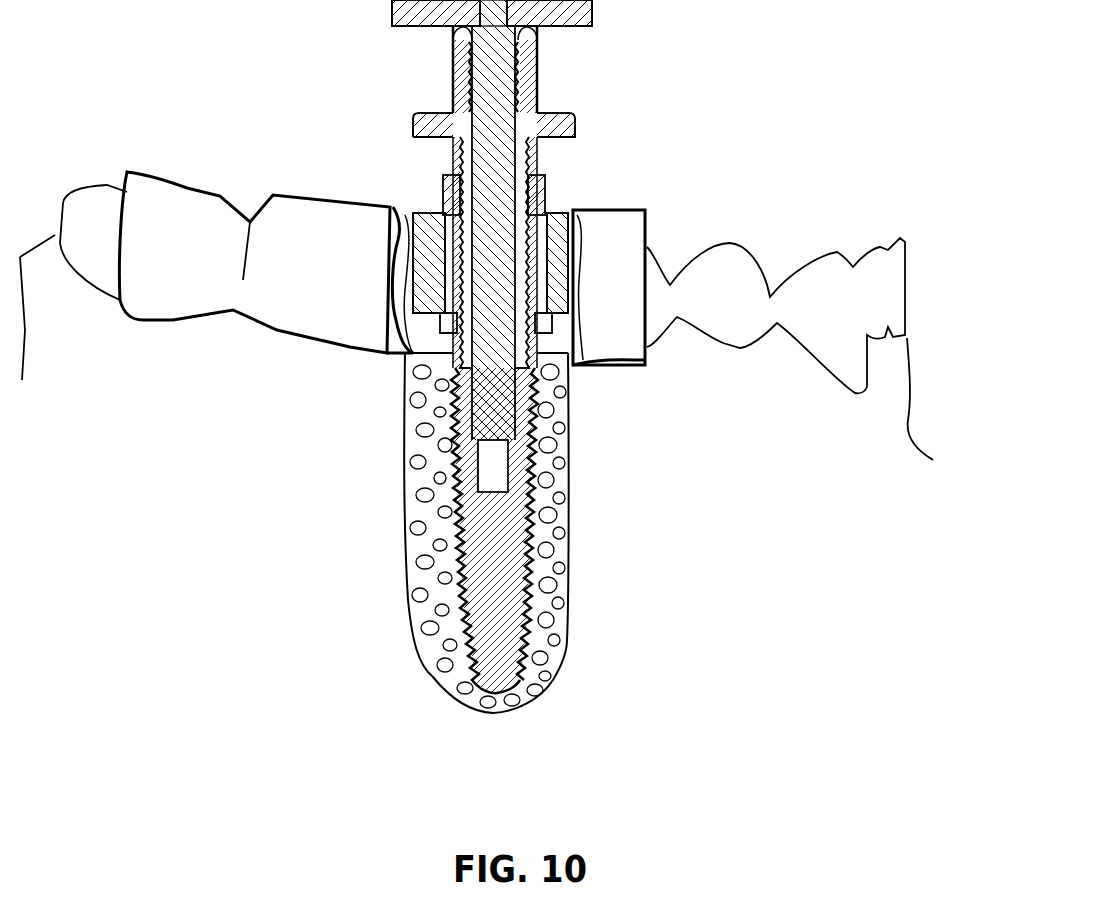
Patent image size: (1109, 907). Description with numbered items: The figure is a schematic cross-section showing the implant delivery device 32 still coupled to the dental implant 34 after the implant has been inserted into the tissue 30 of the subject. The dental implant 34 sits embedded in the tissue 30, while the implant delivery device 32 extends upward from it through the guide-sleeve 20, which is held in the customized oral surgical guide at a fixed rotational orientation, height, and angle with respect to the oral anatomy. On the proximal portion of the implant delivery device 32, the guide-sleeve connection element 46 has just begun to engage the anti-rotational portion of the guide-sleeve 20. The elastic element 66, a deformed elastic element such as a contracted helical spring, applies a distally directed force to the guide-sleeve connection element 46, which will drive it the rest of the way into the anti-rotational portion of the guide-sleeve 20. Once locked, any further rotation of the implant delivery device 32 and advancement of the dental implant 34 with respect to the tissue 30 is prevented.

The implant delivery device 32 is at (628, 62).
The elastic element 66 is at (452, 152).
The guide-sleeve connection element 46 is at (548, 200).
The guide-sleeve 20 is at (560, 212).
The tissue 30 is at (407, 502).
The dental implant 34 is at (507, 549).